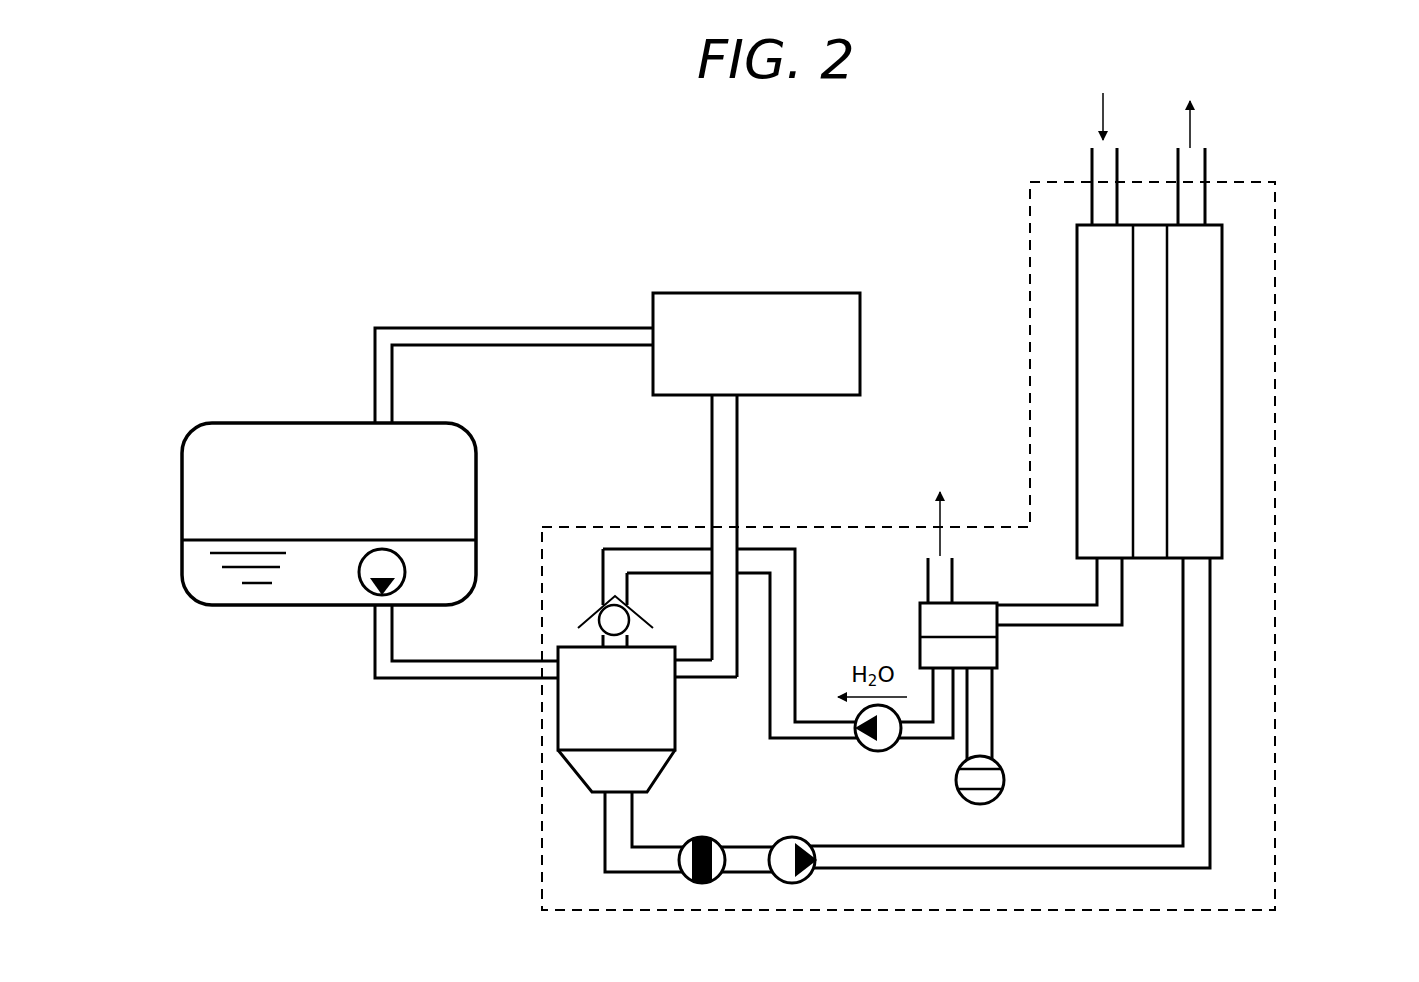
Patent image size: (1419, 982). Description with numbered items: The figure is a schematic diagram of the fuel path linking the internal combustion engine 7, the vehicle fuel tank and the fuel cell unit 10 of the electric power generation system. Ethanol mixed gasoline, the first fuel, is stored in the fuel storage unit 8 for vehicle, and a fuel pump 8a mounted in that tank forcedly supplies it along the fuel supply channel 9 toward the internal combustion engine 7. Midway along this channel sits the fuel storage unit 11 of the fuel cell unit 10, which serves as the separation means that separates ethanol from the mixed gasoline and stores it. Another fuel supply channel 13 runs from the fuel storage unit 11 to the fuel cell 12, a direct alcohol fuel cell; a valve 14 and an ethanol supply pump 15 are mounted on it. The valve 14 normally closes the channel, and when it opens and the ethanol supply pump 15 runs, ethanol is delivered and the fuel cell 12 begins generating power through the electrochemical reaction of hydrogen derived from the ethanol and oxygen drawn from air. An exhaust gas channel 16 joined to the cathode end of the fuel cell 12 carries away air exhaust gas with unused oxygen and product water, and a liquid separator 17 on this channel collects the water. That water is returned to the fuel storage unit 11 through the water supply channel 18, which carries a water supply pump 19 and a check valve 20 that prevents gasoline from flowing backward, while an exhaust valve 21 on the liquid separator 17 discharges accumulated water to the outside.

The internal combustion engine 7 is at (825, 292).
The fuel storage unit for vehicle 8 is at (223, 423).
The fuel pump 8a is at (358, 572).
The fuel supply channel 9 is at (385, 680).
The fuel cell unit 10 is at (1282, 518).
The fuel storage unit 11 is at (675, 700).
The fuel cell 12 is at (1222, 318).
The fuel supply channel 13 is at (603, 827).
The valve 14 is at (702, 837).
The ethanol supply pump 15 is at (789, 837).
The exhaust gas channel 16 is at (1087, 627).
The liquid separator 17 is at (920, 607).
The water supply channel 18 is at (797, 553).
The water supply pump 19 is at (885, 752).
The check valve 20 is at (594, 613).
The exhaust valve 21 is at (990, 803).